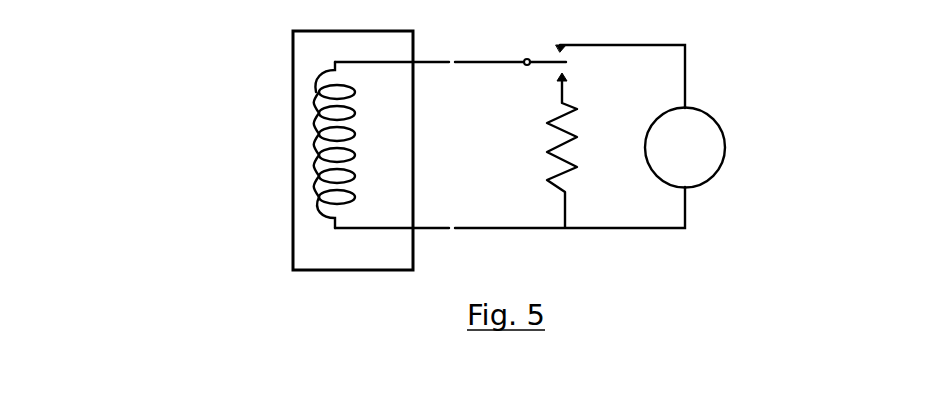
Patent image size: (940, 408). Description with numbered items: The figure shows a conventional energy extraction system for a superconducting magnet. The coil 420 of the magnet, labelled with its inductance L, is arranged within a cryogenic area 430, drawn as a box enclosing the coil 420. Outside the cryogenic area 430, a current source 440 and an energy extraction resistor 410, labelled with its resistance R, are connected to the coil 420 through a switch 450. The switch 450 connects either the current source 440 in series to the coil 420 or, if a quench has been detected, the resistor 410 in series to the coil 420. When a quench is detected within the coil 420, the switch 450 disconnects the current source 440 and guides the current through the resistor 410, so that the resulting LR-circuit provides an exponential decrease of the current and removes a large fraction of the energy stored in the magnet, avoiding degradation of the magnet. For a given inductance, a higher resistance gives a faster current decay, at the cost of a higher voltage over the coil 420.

The energy extraction resistor 410 is at (578, 197).
The coil 420 is at (318, 162).
The cryogenic area 430 is at (290, 205).
The current source 440 is at (713, 175).
The switch 450 is at (527, 60).